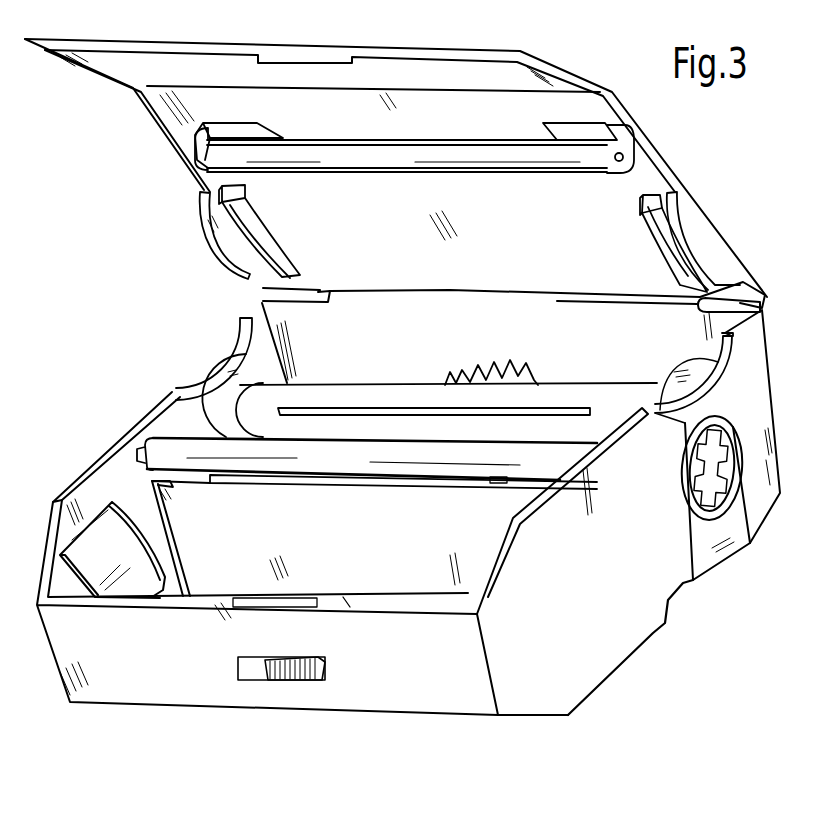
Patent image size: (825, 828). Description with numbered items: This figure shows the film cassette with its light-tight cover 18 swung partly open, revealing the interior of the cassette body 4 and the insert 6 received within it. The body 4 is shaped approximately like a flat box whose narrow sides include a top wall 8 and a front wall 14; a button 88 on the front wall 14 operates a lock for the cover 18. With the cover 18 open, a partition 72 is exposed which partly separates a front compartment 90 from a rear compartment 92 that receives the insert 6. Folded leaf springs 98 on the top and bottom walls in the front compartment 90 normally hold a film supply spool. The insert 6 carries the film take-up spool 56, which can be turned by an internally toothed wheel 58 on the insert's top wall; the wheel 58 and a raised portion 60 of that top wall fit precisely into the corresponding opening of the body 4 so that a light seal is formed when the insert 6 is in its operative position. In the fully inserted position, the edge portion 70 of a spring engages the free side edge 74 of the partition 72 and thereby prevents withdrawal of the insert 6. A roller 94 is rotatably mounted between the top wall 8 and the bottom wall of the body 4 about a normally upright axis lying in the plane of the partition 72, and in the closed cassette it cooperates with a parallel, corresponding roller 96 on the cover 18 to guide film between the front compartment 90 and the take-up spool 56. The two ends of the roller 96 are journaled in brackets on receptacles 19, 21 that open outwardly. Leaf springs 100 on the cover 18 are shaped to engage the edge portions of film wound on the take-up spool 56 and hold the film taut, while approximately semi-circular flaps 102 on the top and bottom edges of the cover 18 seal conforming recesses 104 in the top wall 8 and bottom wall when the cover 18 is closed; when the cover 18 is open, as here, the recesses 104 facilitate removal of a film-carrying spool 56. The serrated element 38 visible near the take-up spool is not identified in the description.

The body 4 is at (630, 681).
The insert 6 is at (732, 579).
The top wall 8 is at (650, 632).
The front wall 14 is at (197, 702).
The light-tight cover 18 is at (165, 112).
The receptacle 19 is at (258, 124).
The receptacle 21 is at (545, 123).
The cutting blade 38 is at (533, 380).
The film take-up spool 56 is at (350, 393).
The internally toothed wheel 58 is at (737, 442).
The raised portion 60 is at (748, 538).
The edge portion 70 is at (368, 481).
The partition 72 is at (323, 557).
The free side edge 74 is at (157, 488).
The button 88 is at (303, 650).
The front compartment 90 is at (418, 600).
The rear compartment 92 is at (715, 347).
The roller 94 is at (463, 465).
The roller 96 is at (420, 172).
The folded leaf spring 98 is at (138, 550).
The leaf spring 100 is at (262, 235).
The flap 102 is at (224, 245).
The recess 104 is at (240, 340).